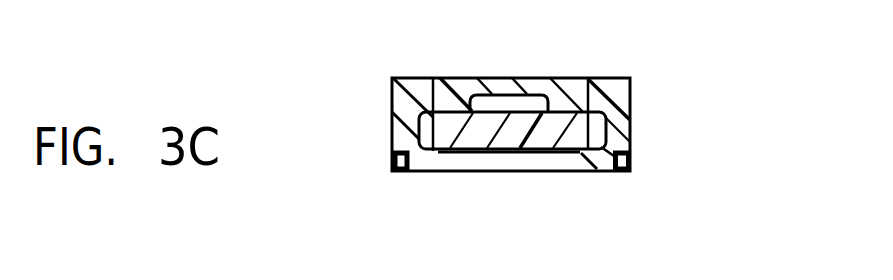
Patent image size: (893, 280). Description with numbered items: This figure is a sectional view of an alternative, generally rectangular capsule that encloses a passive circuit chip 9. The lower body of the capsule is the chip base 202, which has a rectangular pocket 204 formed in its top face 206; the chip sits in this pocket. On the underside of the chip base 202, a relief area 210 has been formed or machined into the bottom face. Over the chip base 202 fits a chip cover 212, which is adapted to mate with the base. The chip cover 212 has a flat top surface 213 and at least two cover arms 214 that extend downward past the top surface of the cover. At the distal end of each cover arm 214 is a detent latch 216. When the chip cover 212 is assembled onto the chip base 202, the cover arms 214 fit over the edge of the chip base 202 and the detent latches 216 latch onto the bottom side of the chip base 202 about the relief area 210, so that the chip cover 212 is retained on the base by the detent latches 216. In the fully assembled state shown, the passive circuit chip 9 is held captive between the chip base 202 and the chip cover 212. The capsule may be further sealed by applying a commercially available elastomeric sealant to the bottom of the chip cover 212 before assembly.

The passive circuit chip 9 is at (540, 102).
The chip base 202 is at (628, 163).
The rectangular pocket 204 is at (447, 77).
The top face 206 is at (563, 172).
The relief area 210 is at (521, 163).
The chip cover 212 is at (551, 58).
The flat top surface 213 is at (573, 77).
The cover arms 214 is at (392, 126).
The detent latch 216 is at (437, 162).